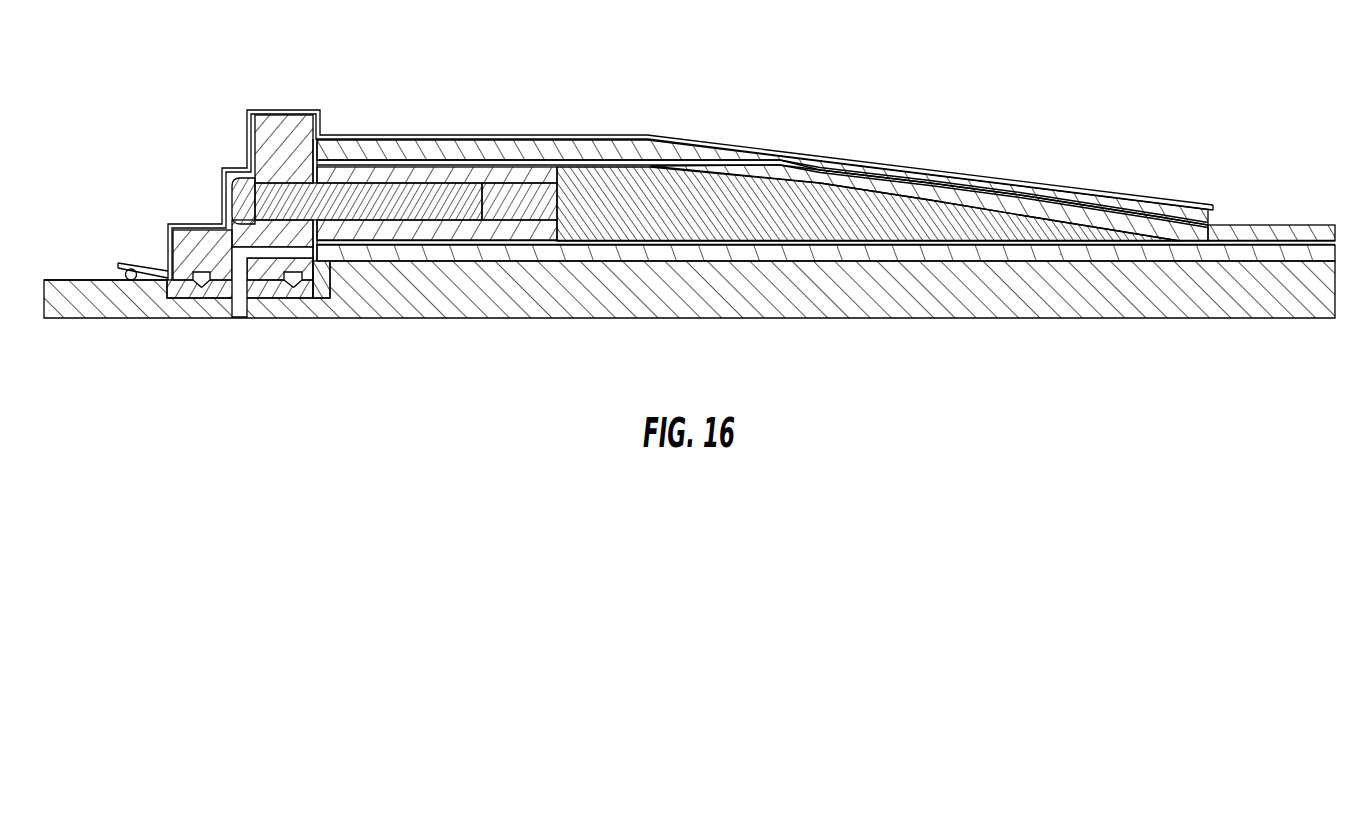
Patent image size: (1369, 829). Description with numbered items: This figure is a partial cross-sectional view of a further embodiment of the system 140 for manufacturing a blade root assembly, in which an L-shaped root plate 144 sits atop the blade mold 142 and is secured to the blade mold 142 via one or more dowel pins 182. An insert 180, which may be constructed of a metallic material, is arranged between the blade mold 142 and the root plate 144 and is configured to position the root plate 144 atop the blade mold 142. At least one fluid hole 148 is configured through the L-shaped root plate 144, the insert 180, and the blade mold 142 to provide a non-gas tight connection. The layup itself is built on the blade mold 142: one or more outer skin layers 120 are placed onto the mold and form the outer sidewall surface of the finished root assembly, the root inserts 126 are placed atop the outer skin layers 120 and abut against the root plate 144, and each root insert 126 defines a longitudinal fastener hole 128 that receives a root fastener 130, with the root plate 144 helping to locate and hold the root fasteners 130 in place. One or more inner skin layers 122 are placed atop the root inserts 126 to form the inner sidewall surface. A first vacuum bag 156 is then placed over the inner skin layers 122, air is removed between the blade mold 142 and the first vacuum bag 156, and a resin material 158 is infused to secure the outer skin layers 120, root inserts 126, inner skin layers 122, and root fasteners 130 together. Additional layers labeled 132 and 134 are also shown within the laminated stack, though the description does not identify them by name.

The outer skin layers 120 is at (948, 250).
The inner skin layers 122 is at (912, 190).
The root inserts 126 is at (517, 183).
The longitudinal fastener holes 128 is at (412, 205).
The root fasteners 130 is at (392, 188).
The intermediate layer 132 is at (333, 177).
The lower panel layer 134 is at (938, 217).
The system 140 is at (206, 155).
The blade mold 142 is at (1238, 317).
The root plate 144 is at (275, 132).
The fluid hole 148 is at (239, 292).
The first vacuum bag 156 is at (888, 163).
The resin material 158 is at (1228, 213).
The insert 180 is at (253, 295).
The dowel pins 182 is at (196, 290).